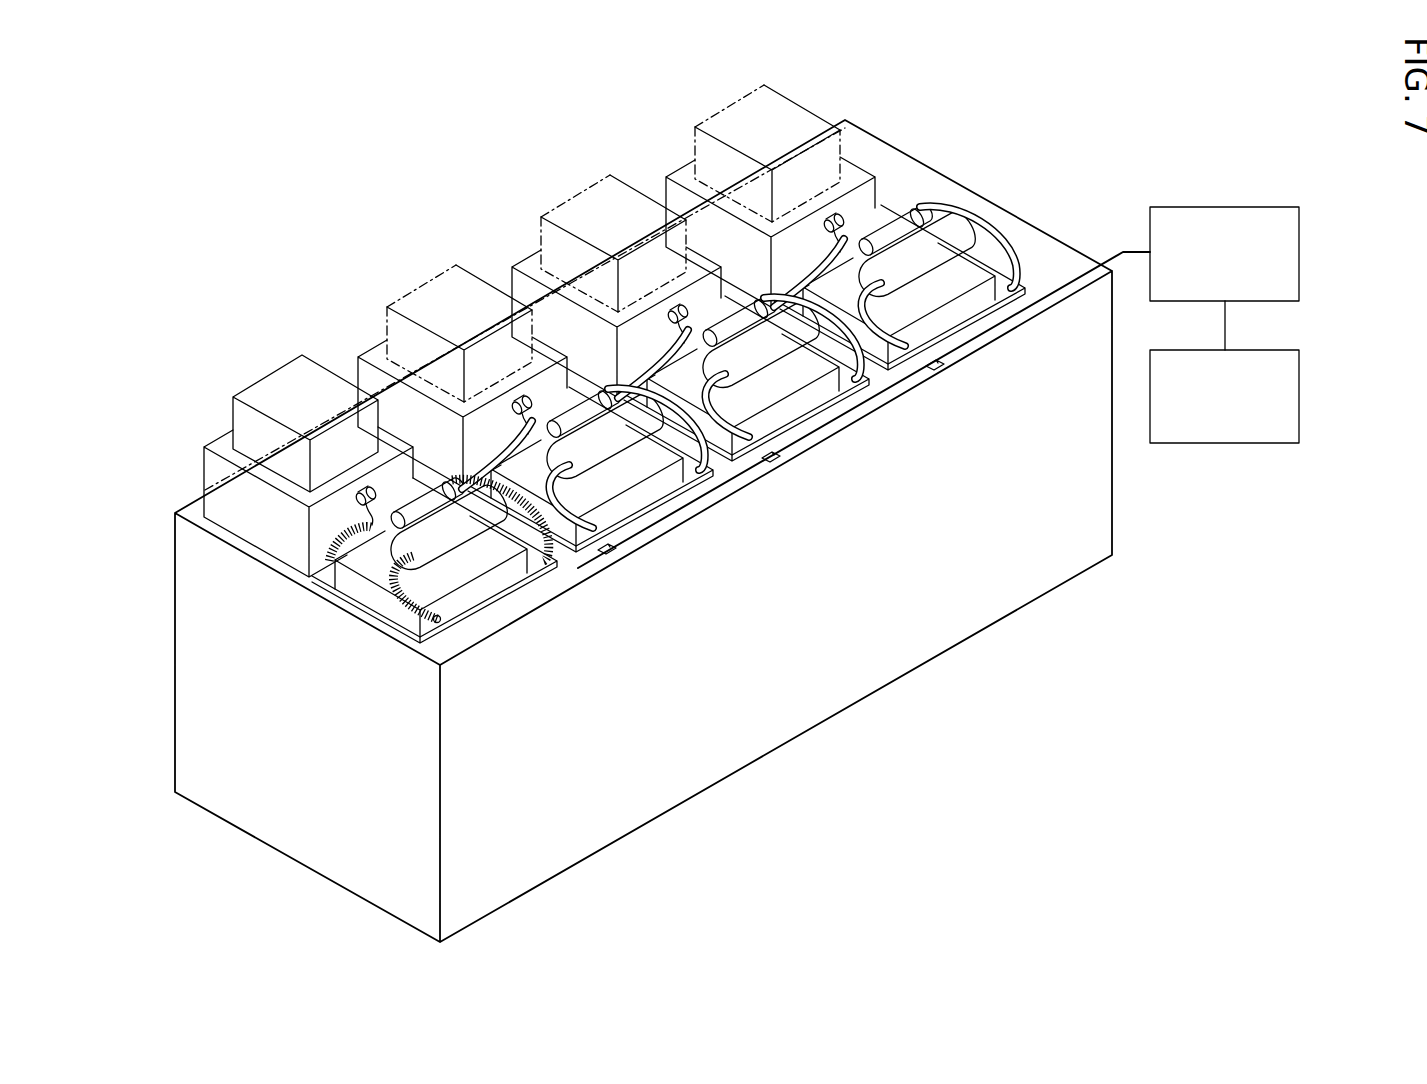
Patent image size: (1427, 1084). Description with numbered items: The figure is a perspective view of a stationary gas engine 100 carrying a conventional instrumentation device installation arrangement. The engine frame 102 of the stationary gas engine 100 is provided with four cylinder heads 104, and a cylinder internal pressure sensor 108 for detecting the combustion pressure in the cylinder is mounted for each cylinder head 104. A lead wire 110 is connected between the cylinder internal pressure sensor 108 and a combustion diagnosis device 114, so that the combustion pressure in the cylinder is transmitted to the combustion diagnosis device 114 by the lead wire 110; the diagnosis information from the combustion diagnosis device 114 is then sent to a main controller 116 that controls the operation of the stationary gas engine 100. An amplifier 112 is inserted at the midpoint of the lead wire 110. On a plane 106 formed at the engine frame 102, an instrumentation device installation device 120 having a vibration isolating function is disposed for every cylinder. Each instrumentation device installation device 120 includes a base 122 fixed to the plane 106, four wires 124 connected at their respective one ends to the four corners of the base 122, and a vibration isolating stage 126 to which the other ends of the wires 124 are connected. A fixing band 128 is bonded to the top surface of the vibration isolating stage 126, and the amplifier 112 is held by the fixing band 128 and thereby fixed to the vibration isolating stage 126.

The stationary gas engine 100 is at (293, 321).
The engine frame 102 is at (173, 627).
The cylinder head 104 is at (204, 469).
The plane 106 is at (465, 637).
The cylinder internal pressure sensor 108 is at (362, 505).
The lead wire 110 is at (677, 511).
The amplifier 112 is at (450, 508).
The combustion diagnosis device 114 is at (1300, 246).
The main controller 116 is at (1300, 396).
The instrumentation device installation device 120 is at (629, 453).
The base 122 is at (384, 604).
The wire 124 is at (330, 570).
The vibration isolating stage 126 is at (497, 512).
The fixing band 128 is at (428, 525).